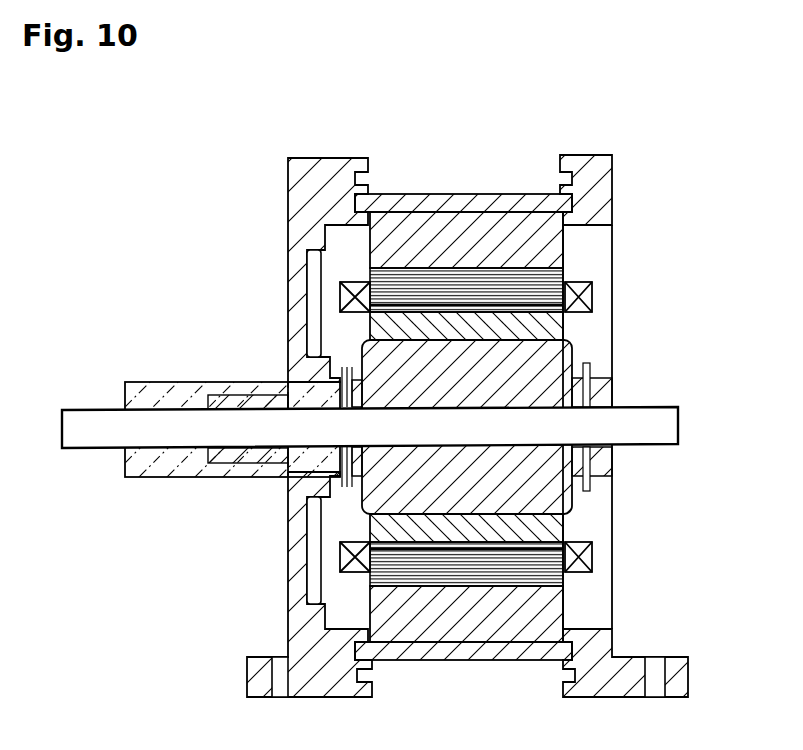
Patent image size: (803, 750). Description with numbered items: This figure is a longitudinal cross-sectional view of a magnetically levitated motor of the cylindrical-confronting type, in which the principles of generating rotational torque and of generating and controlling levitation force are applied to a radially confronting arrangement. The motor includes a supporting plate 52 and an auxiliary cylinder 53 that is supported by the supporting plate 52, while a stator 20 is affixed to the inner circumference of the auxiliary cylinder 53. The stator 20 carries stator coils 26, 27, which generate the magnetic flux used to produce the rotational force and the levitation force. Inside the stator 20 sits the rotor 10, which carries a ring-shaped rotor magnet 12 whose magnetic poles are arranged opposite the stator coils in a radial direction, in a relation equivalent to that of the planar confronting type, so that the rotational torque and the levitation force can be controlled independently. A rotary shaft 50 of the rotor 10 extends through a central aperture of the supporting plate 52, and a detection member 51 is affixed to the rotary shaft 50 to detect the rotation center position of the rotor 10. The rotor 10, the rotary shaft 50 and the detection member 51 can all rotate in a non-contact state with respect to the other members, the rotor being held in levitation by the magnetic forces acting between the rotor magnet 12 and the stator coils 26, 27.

The rotor 10 is at (573, 352).
The ring-shaped rotor magnet 12 is at (598, 513).
The stator 20 is at (602, 613).
The stator coil 26 is at (537, 407).
The stator coil 27 is at (592, 297).
The rotary shaft 50 is at (63, 406).
The detection member 51 is at (160, 381).
The supporting plate 52 is at (288, 172).
The auxiliary cylinder 53 is at (478, 661).